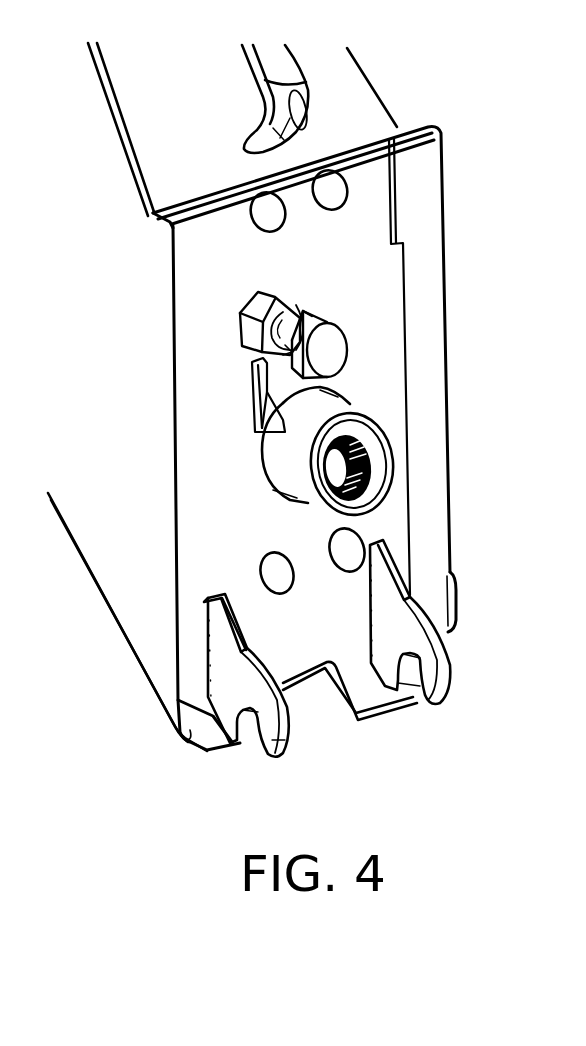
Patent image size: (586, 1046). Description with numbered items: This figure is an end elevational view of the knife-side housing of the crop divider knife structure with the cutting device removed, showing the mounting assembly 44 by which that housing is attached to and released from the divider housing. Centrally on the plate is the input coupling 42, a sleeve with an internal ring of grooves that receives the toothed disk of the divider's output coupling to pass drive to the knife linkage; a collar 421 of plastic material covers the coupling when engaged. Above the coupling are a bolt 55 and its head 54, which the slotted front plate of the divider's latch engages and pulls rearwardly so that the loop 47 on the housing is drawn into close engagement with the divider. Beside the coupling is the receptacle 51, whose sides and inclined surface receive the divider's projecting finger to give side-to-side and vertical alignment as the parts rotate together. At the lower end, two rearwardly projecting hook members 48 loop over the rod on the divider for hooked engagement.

The input coupling 42 is at (411, 453).
The collar 421 is at (392, 470).
The mounting assembly 44 is at (478, 513).
The loop 47 is at (385, 310).
The engaging hook member 48 is at (418, 640).
The receptacle 51 is at (252, 378).
The head 54 is at (338, 352).
The bolt 55 is at (292, 294).